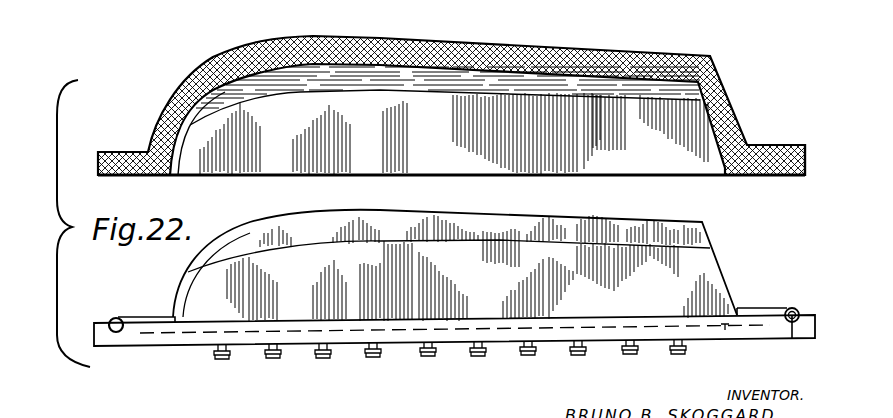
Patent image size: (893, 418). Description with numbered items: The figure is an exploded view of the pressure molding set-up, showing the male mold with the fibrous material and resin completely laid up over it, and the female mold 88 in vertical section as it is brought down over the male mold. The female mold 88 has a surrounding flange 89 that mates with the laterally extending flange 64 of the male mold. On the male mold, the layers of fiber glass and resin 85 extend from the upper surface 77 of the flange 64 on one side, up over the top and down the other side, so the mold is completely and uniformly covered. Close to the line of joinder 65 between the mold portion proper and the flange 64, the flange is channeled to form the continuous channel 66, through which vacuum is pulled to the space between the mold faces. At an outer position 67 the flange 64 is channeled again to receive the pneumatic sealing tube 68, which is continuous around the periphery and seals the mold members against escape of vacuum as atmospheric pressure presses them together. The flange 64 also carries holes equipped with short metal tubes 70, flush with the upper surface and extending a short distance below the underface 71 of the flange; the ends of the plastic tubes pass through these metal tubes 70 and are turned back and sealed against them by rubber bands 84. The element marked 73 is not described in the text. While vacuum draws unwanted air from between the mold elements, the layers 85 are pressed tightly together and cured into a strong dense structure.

The female mold 88 is at (543, 46).
The surrounding flange 89 is at (770, 146).
The line of joinder 65 is at (738, 314).
The layers of fiber glass and resin 85 is at (405, 303).
The channel 66 is at (722, 340).
The underface 71 is at (455, 345).
The outer position 67 is at (792, 342).
The clamping rail 77 is at (772, 310).
The pneumatic sealing tube 68 is at (798, 310).
The short metal tubes 70 is at (214, 351).
The nozzle neck 73 is at (279, 356).
The rubber bands 84 is at (266, 355).
The laterally extending flange 64 is at (683, 349).